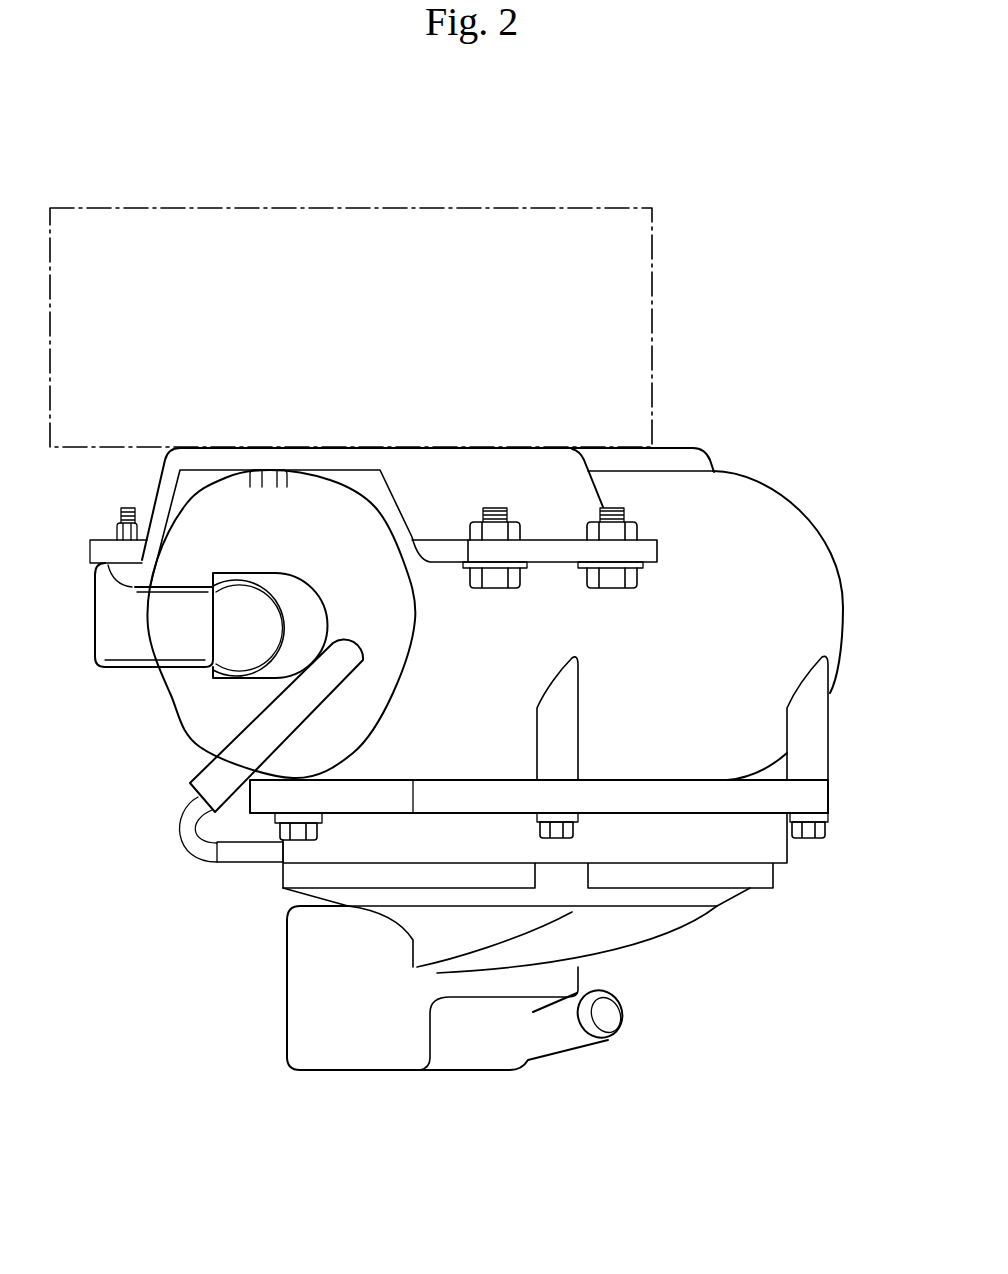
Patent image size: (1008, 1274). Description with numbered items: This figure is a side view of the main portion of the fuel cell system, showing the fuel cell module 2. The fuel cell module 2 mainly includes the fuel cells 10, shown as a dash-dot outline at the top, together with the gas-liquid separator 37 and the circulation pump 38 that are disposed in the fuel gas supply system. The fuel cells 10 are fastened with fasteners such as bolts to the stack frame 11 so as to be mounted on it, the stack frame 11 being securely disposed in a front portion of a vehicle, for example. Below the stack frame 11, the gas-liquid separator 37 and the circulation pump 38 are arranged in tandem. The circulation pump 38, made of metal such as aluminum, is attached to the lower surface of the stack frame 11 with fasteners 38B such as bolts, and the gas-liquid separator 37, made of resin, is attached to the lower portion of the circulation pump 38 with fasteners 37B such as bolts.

The fuel cell module 2 is at (786, 190).
The fuel cells 10 is at (652, 283).
The stack frame 11 is at (673, 450).
The circulation pump 38 is at (788, 501).
The fasteners 38B is at (127, 522).
The gas-liquid separator 37 is at (620, 953).
The fasteners 37B is at (293, 840).